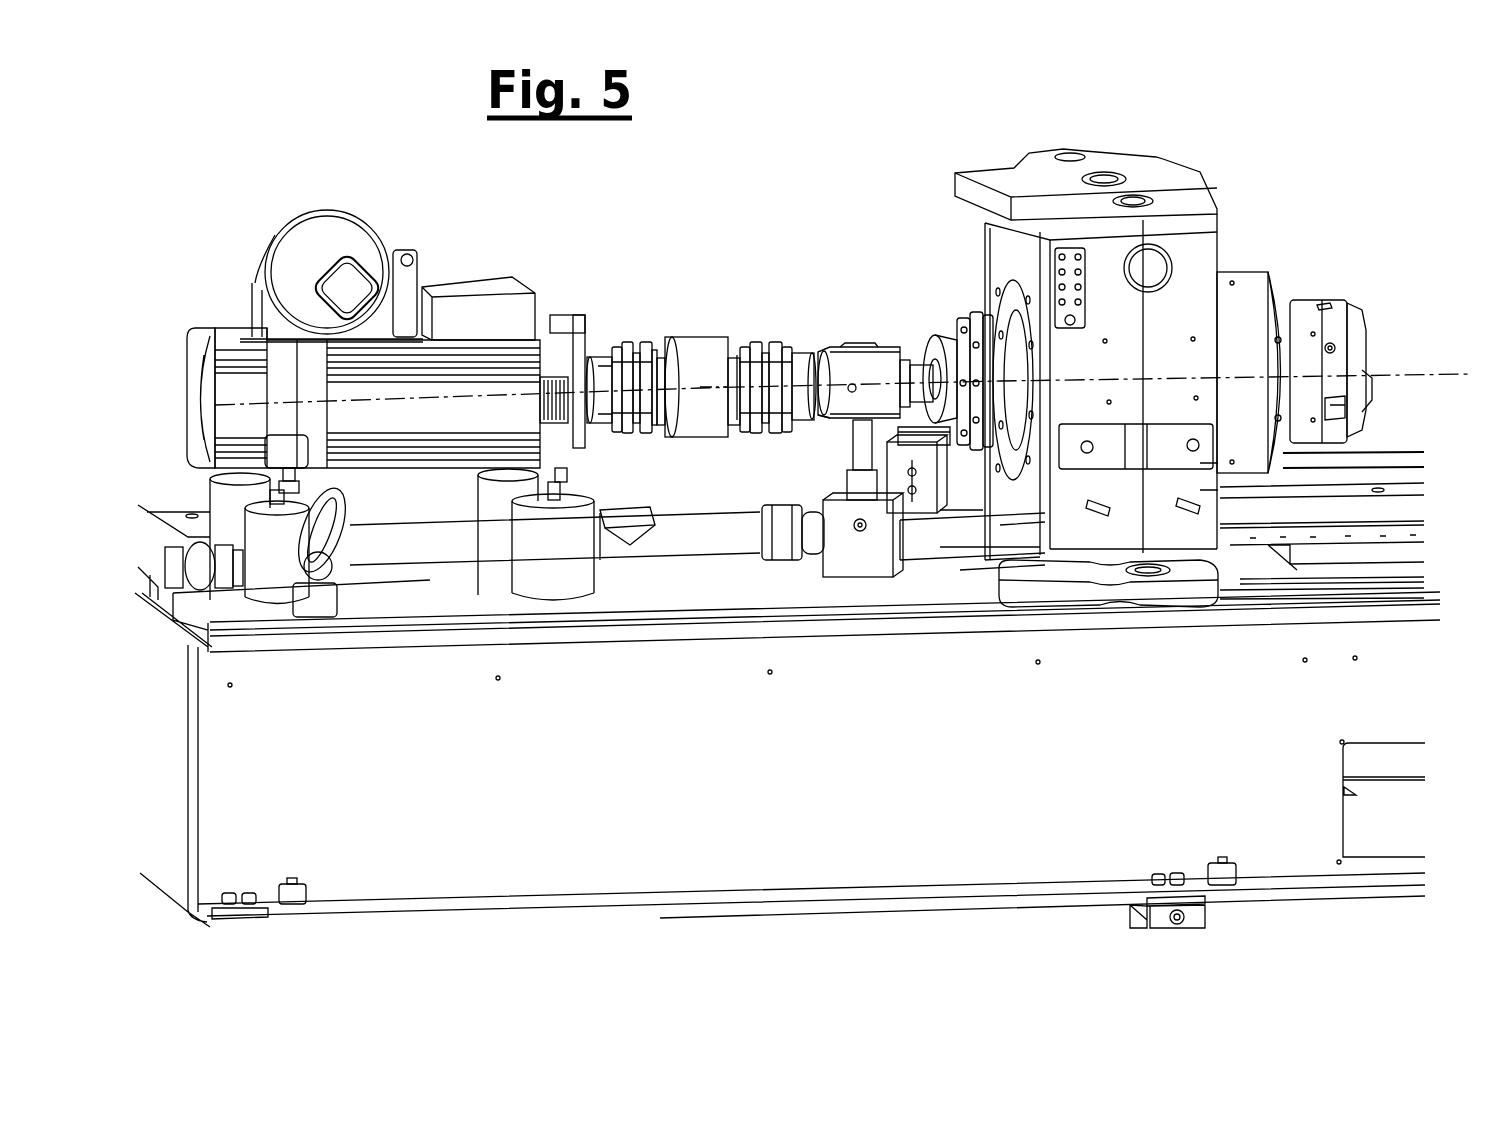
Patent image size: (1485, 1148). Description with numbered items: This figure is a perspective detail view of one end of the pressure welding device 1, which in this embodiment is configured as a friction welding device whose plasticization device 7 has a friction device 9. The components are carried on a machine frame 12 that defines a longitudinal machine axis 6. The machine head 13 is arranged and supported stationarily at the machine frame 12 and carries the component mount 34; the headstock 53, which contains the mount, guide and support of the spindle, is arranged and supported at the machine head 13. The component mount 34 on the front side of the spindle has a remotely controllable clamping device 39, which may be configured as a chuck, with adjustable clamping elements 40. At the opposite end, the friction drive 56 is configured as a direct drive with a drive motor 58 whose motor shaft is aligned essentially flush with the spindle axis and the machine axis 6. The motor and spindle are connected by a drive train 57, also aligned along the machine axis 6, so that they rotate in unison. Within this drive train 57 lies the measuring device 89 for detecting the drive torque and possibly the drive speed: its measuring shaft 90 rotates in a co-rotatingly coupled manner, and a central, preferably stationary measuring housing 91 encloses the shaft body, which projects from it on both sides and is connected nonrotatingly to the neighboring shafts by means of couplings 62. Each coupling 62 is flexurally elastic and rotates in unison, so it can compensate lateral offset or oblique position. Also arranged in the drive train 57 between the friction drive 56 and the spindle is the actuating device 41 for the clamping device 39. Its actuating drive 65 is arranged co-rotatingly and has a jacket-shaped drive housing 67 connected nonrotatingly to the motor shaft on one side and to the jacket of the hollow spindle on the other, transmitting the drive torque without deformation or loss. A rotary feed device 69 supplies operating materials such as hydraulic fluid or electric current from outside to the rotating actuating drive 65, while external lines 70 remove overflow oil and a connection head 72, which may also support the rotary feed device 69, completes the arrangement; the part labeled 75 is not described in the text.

The pressure welding device 1 is at (790, 196).
The friction drive 56 is at (365, 200).
The drive motor 58 is at (230, 386).
The drive train 57 is at (607, 330).
The measuring shaft 90 is at (665, 372).
The measuring device 89 is at (685, 330).
The measuring housing 91 is at (730, 358).
The coupling 62 is at (770, 330).
The actuating device 41 is at (812, 330).
The rotary feed device 69 is at (860, 350).
The actuating drive 65 is at (925, 342).
The drive shaft hub 75 is at (904, 344).
The drive housing 67 is at (970, 352).
The machine head 13 is at (1195, 256).
The headstock 53 is at (1118, 353).
The component mount 34 is at (1270, 290).
The clamping device 39 is at (1292, 308).
The clamping elements 40 is at (1355, 310).
The machine axis 6 is at (1438, 370).
The external lines 70 is at (725, 545).
The connection head 72 is at (880, 565).
The plasticization device 7 is at (1224, 498).
The friction device 9 is at (1321, 608).
The machine frame 12 is at (245, 750).